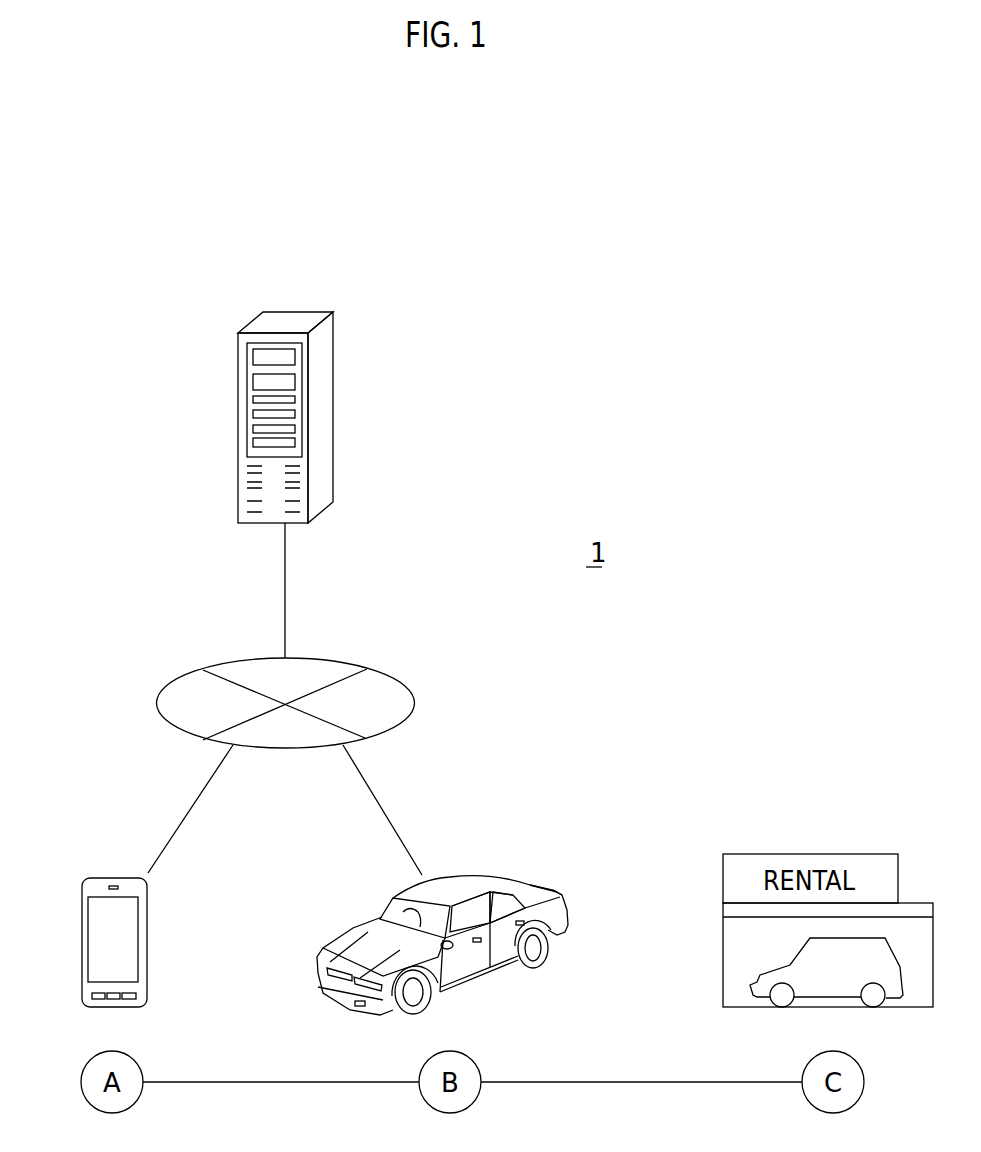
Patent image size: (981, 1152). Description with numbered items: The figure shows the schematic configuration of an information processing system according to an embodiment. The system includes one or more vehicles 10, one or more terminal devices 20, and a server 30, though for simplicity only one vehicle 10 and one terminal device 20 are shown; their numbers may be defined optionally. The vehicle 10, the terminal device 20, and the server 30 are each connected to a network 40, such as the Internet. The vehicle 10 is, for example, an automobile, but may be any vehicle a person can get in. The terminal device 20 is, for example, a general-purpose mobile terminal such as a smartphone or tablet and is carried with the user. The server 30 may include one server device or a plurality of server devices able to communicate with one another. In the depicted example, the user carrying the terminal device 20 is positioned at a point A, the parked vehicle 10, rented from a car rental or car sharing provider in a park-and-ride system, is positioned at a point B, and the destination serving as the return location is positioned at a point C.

The vehicle 10 is at (530, 882).
The terminal device 20 is at (82, 951).
The server 30 is at (333, 412).
The network 40 is at (185, 675).